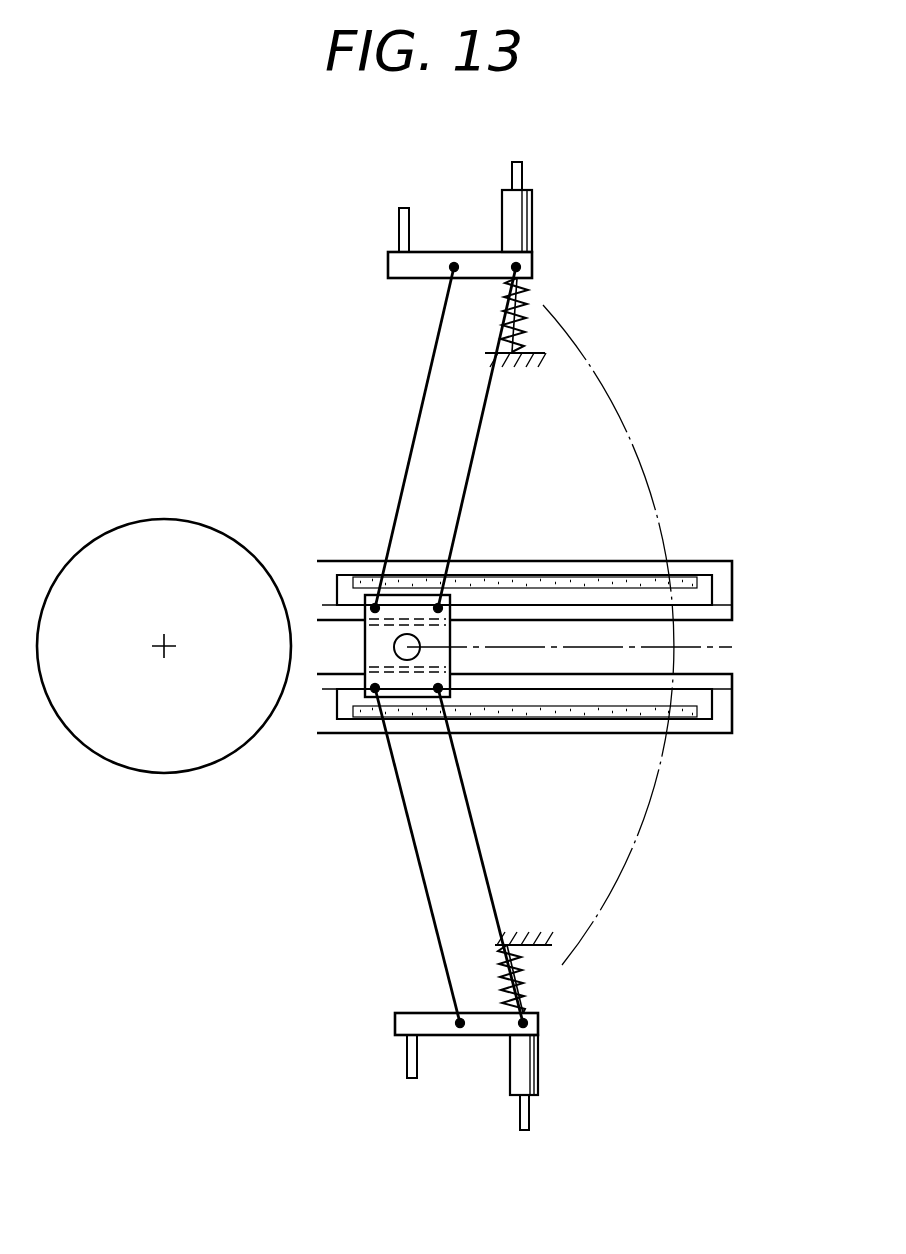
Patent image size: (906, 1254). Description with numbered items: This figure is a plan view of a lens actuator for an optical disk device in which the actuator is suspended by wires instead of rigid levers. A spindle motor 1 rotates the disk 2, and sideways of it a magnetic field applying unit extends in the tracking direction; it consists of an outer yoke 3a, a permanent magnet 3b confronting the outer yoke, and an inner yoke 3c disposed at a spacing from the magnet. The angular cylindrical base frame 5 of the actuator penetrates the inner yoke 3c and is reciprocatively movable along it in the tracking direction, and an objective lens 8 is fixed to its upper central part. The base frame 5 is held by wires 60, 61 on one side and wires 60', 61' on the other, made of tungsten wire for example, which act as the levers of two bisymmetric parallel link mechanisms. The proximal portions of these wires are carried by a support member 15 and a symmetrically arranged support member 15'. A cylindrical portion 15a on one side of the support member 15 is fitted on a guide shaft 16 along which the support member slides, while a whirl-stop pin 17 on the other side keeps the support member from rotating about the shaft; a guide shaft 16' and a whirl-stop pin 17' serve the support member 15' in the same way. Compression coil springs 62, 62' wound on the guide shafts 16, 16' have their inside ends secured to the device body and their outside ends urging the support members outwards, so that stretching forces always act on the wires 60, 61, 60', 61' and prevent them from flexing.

The spindle motor 1 is at (236, 554).
The disk 2 is at (622, 404).
The outer yoke 3a is at (558, 561).
The permanent magnet 3b is at (690, 580).
The inner yoke 3c is at (733, 612).
The base frame 5 is at (375, 643).
The objective lens 8 is at (407, 647).
The support member 15 is at (451, 985).
The support member 15' is at (422, 278).
The cylindrical portion 15a is at (538, 1078).
The guide shaft 16 is at (492, 1121).
The guide shaft 16' is at (552, 203).
The whirl-stop pin 17 is at (382, 1071).
The whirl-stop pin 17' is at (441, 213).
The wire 60 is at (501, 855).
The wire 60' is at (503, 437).
The wire 61 is at (407, 855).
The wire 61' is at (393, 437).
The compression coil spring 62 is at (554, 980).
The compression coil spring 62' is at (549, 317).